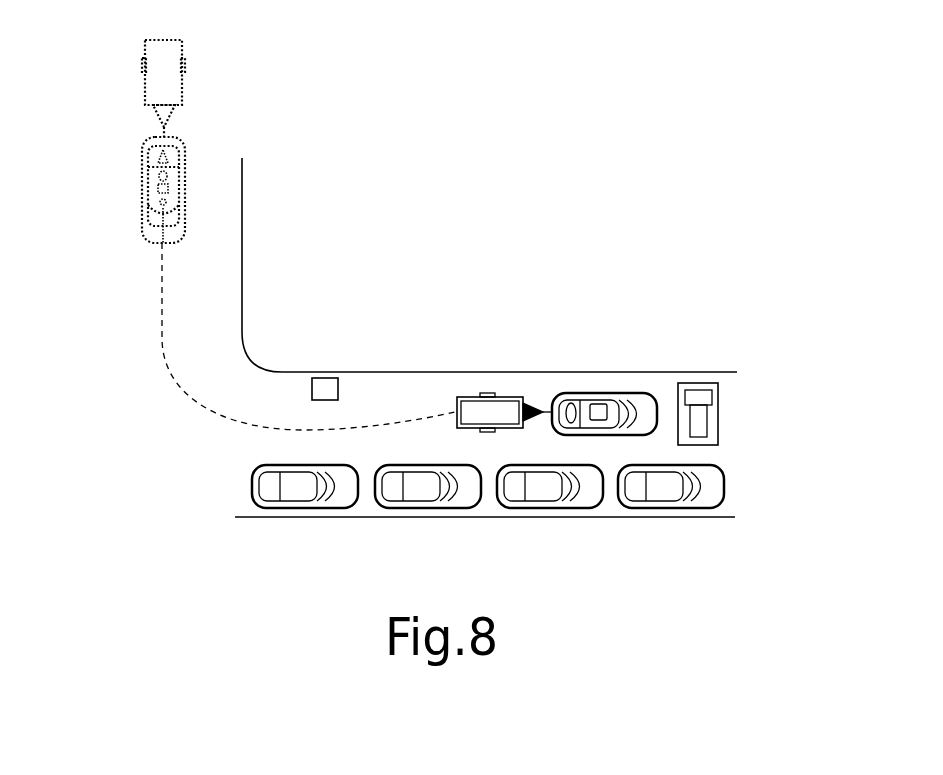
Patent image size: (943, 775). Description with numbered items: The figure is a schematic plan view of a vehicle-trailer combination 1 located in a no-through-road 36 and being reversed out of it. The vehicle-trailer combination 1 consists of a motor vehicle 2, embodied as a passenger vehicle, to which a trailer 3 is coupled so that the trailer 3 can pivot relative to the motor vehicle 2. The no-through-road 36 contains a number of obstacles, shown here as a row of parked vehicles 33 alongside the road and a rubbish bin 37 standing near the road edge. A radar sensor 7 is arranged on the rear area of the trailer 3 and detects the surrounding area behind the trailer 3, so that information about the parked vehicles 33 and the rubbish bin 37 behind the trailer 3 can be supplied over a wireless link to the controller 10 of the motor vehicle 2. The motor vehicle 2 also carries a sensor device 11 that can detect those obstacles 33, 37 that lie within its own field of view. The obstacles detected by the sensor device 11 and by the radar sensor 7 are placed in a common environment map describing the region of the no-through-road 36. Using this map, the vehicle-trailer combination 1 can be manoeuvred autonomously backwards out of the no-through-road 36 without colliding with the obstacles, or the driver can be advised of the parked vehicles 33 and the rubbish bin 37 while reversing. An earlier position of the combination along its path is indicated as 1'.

The vehicle-trailer combination 1 is at (604, 360).
The motor vehicle at earlier position 1' is at (124, 141).
The motor vehicle 2 is at (632, 393).
The trailer 3 is at (497, 397).
The radar sensor 7 is at (455, 412).
The controller 10 is at (602, 396).
The sensor device 11 is at (567, 395).
The parked vehicles 33 is at (303, 497).
The no-through-road 36 is at (718, 405).
The rubbish bin 37 is at (325, 378).